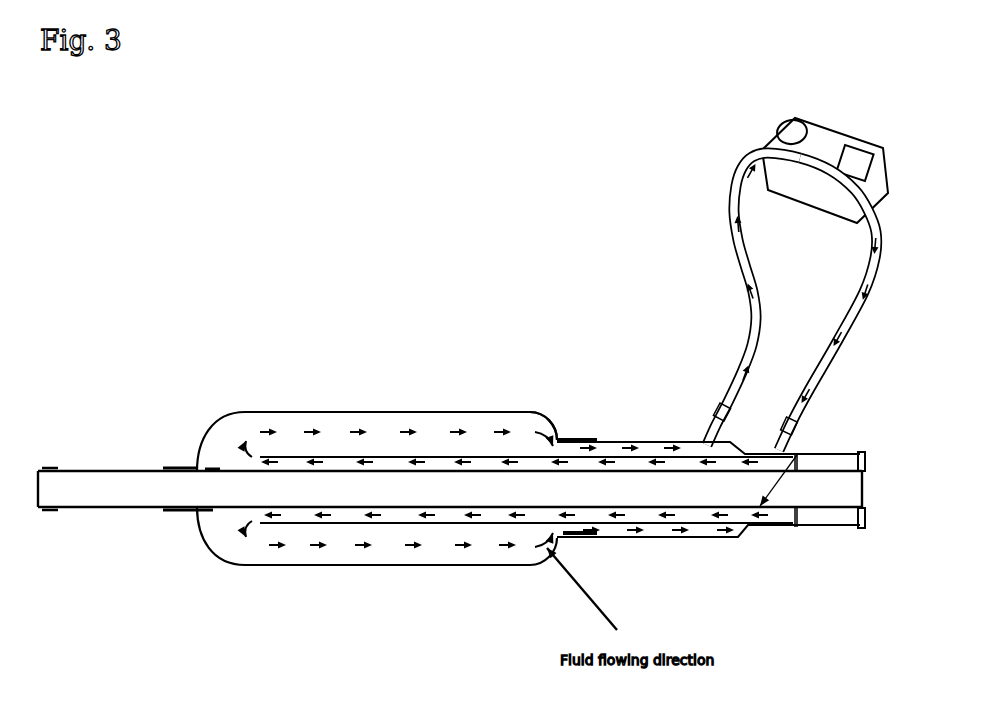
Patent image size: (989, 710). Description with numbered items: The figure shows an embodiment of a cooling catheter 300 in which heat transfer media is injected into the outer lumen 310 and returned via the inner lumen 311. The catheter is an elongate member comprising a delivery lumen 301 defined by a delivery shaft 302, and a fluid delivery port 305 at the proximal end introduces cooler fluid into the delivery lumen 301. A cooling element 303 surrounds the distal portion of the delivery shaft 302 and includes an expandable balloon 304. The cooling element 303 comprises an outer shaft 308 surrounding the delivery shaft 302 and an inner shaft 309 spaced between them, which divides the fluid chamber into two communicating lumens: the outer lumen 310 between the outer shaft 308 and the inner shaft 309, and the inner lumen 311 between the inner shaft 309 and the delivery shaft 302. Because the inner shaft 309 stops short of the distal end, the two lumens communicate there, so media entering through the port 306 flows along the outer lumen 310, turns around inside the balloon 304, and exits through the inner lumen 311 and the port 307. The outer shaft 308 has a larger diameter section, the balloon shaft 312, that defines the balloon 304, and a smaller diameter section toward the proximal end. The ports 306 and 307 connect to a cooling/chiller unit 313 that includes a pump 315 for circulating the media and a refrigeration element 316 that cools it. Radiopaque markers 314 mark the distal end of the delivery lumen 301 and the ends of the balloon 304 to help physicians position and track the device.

The cooling catheter 300 is at (602, 382).
The delivery lumen 301 is at (130, 483).
The delivery shaft 302 is at (90, 461).
The cooling element 303 is at (563, 411).
The balloon 304 is at (382, 407).
The fluid delivery port 305 is at (868, 493).
The heat transfer media port 306 is at (707, 420).
The heat transfer media port 307 is at (792, 447).
The outer shaft 308 is at (698, 537).
The inner shaft 309 is at (292, 450).
The outer lumen 310 is at (615, 443).
The inner lumen 311 is at (777, 518).
The balloon shaft 312 is at (497, 408).
The cooling/chiller unit 313 is at (825, 170).
The radiopaque markers 314 is at (535, 525).
The pump 315 is at (777, 122).
The refrigeration element 316 is at (878, 166).